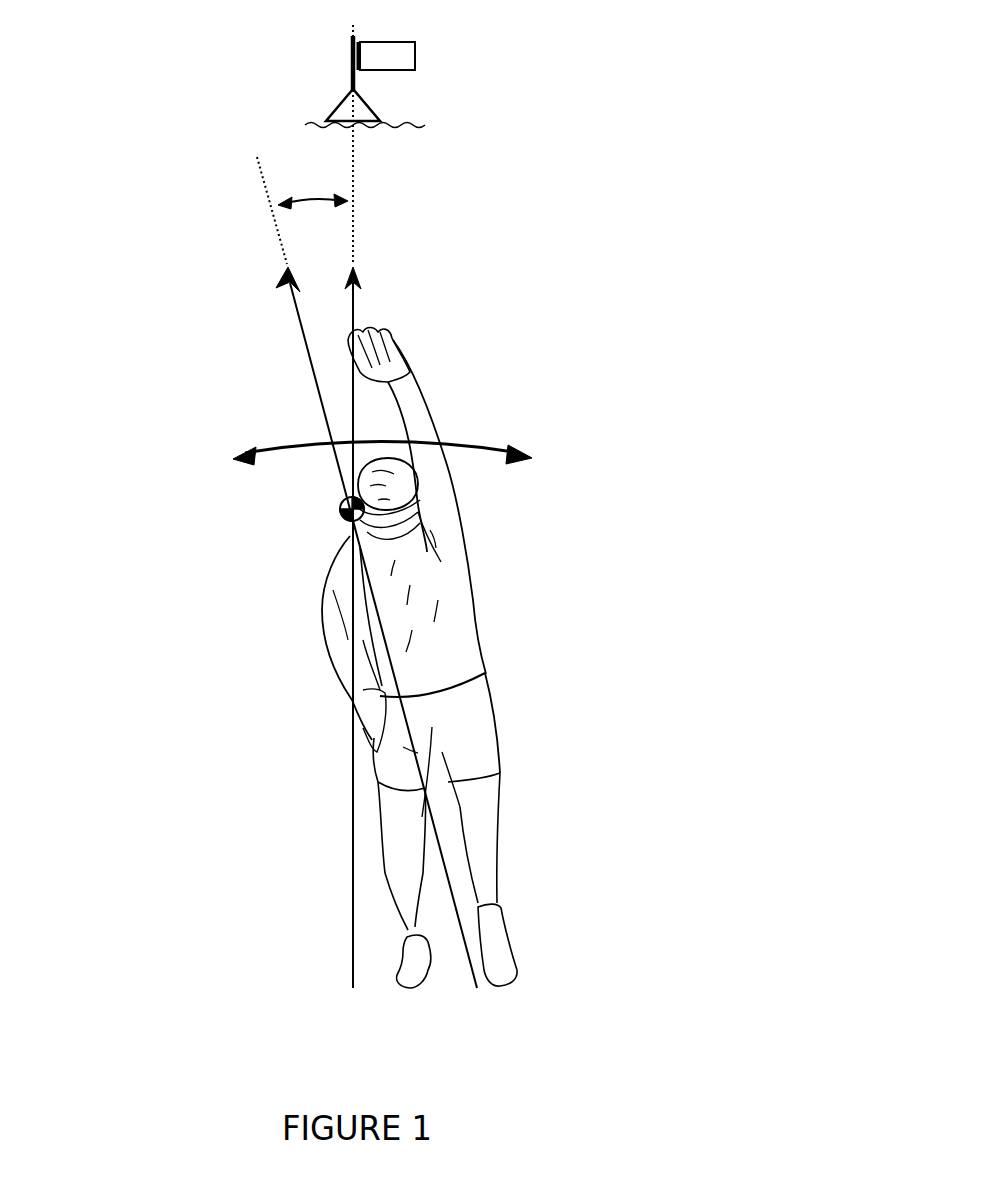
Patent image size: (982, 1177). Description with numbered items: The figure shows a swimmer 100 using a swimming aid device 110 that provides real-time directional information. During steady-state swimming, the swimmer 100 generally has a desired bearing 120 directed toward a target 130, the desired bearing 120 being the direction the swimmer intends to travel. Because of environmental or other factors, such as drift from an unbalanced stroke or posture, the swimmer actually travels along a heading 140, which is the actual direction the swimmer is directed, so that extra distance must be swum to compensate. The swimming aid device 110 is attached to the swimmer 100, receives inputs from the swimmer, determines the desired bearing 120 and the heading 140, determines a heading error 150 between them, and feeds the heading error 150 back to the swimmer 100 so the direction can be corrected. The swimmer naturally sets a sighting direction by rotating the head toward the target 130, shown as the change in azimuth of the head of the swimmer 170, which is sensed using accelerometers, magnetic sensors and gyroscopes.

The swimmer 100 is at (455, 618).
The swimming aid device 110 is at (330, 508).
The desired bearing 120 is at (453, 213).
The target 130 is at (347, 69).
The heading 140 is at (178, 270).
The heading error 150 is at (277, 189).
The change in azimuth of the head of the swimmer 170 is at (487, 442).